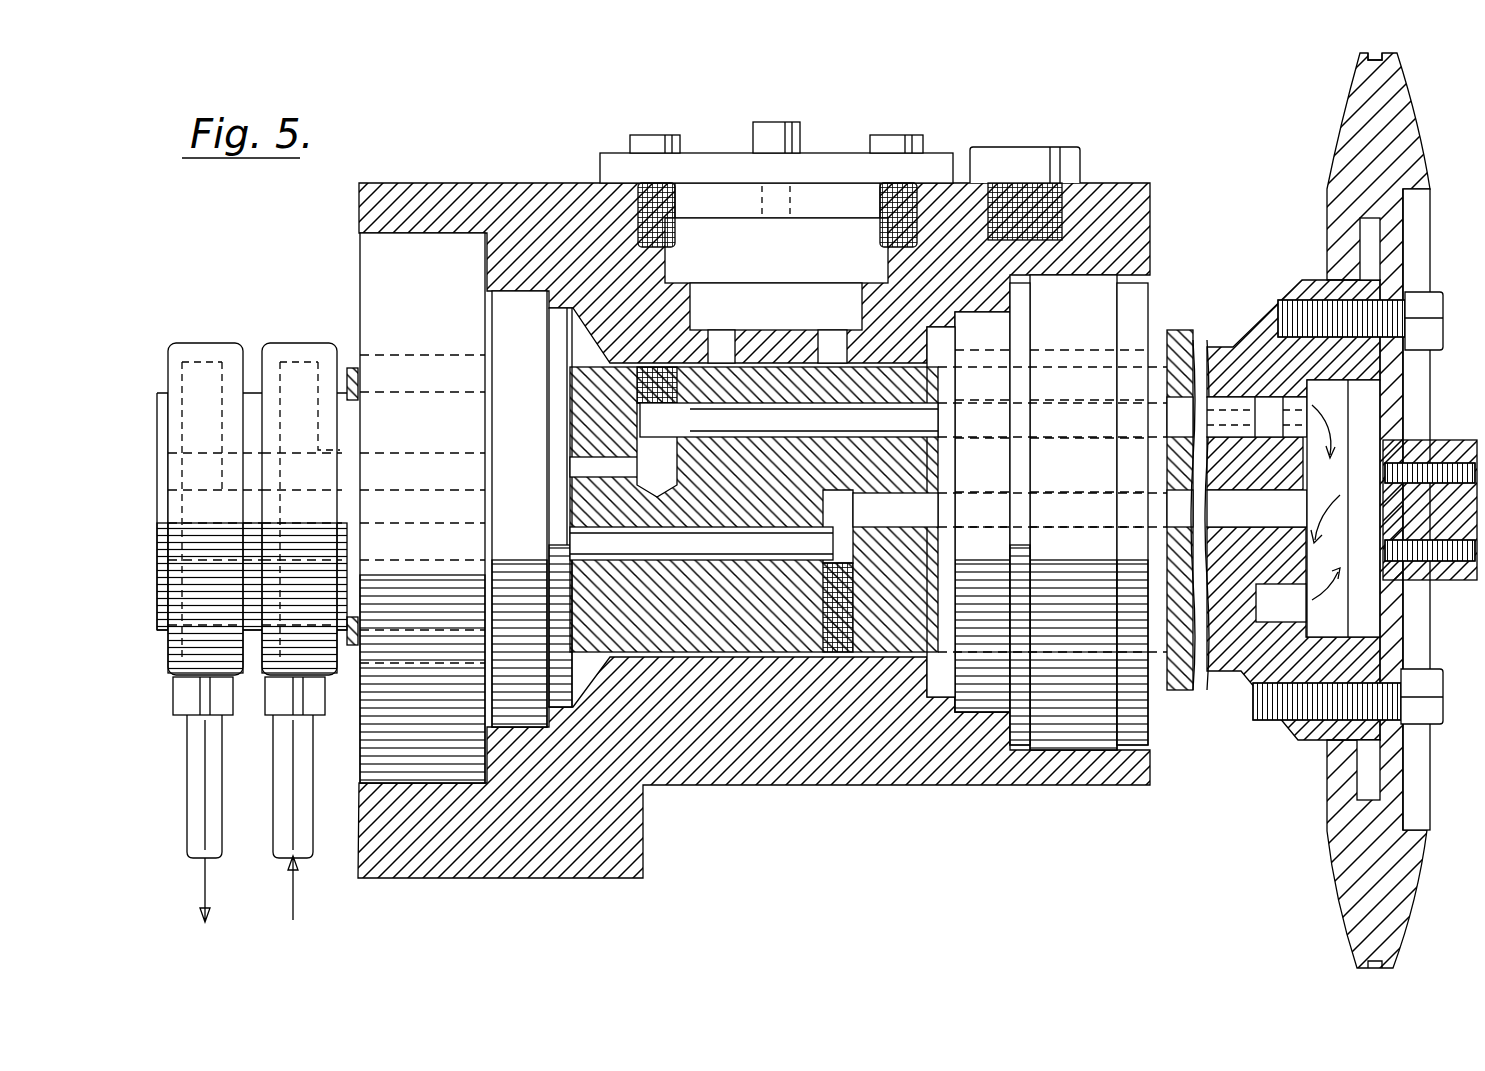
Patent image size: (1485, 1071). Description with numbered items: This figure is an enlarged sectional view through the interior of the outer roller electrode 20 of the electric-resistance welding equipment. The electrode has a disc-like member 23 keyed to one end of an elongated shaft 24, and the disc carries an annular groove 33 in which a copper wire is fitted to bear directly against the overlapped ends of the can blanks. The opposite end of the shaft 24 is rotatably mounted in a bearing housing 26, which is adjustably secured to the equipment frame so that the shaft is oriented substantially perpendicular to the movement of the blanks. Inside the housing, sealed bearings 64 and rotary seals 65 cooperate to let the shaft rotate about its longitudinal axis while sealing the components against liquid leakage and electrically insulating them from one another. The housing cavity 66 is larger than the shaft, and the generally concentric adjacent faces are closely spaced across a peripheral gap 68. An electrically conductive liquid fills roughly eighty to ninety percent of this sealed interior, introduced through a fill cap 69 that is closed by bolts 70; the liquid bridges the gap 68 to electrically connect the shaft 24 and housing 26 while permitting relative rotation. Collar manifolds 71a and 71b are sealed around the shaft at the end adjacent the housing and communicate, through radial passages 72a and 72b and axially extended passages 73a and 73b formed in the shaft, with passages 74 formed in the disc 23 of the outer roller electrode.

The outer roller electrode 20 is at (1256, 176).
The disc-like member 23 is at (1345, 113).
The elongated shaft 24 is at (1213, 672).
The bearing housing 26 is at (1130, 174).
The annular groove 33 is at (1385, 55).
The sealed bearings 64 is at (420, 275).
The rotary seals 65 is at (506, 315).
The housing cavity 66 is at (568, 337).
The peripheral gap 68 is at (765, 652).
The fill cap 69 is at (720, 152).
The bolts 70 is at (652, 136).
The collar manifold 71a is at (277, 343).
The collar manifold 71b is at (197, 343).
The radial passage 72a is at (298, 372).
The radial passage 72b is at (172, 376).
The axially extended passage 73a is at (846, 434).
The axially extended passage 73b is at (716, 559).
The passages 74 is at (1365, 246).